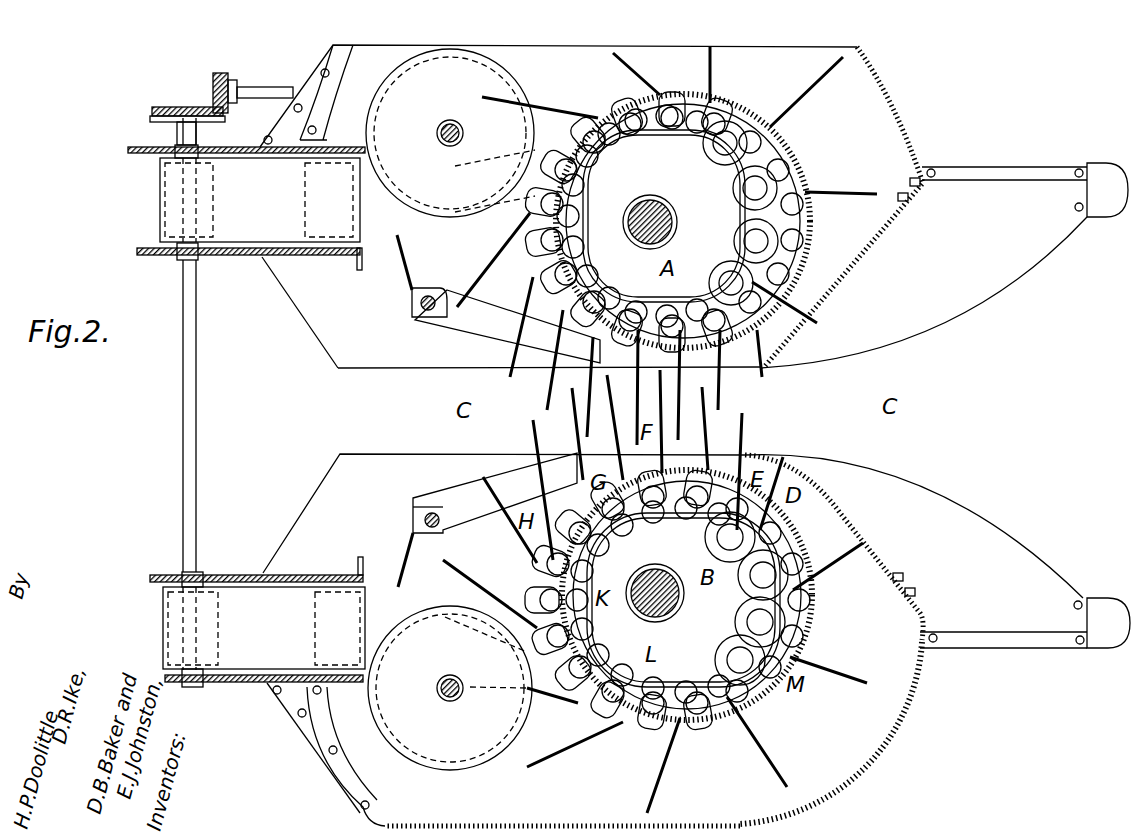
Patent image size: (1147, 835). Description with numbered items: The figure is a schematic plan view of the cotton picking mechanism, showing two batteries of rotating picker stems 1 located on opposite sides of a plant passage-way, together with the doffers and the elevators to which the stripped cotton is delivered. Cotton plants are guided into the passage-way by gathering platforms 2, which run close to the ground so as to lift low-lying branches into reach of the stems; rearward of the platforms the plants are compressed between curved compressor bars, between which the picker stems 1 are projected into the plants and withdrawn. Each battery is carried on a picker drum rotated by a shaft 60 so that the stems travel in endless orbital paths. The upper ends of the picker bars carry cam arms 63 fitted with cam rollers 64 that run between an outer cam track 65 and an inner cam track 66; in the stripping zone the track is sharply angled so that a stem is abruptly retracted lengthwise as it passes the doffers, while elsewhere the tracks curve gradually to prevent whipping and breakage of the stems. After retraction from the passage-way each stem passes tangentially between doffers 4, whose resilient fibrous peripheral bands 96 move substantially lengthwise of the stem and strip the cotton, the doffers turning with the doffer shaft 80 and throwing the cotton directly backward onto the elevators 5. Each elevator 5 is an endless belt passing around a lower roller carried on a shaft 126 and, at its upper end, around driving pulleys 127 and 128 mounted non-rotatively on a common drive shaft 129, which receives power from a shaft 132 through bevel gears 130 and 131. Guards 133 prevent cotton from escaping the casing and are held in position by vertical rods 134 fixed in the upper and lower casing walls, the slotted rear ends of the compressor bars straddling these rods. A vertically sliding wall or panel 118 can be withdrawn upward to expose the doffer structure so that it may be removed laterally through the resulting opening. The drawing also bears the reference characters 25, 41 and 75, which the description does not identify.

The picker stems 1 is at (545, 388).
The gathering platforms 2 is at (916, 407).
The doffers 4 is at (492, 78).
The elevators 5 is at (860, 490).
The end cap 25 is at (1110, 210).
The plate 41 is at (163, 250).
The shaft 60 is at (648, 205).
The cam arms 63 is at (750, 180).
The cam rollers 64 is at (803, 205).
The outer cam track 65 is at (713, 128).
The inner cam track 66 is at (728, 132).
The curved rim 75 is at (897, 730).
The doffer shaft 80 is at (437, 135).
The peripheral band 96 is at (522, 95).
The vertically sliding wall or panel 118 is at (520, 823).
The shaft 126 is at (320, 243).
The driving roller or pulley 127 is at (165, 220).
The driving roller or pulley 128 is at (220, 575).
The drive shaft 129 is at (197, 298).
The bevel gear 130 is at (175, 108).
The bevel gear 131 is at (215, 77).
The shaft 132 is at (263, 87).
The guards 133 is at (400, 263).
The vertical rods 134 is at (413, 307).